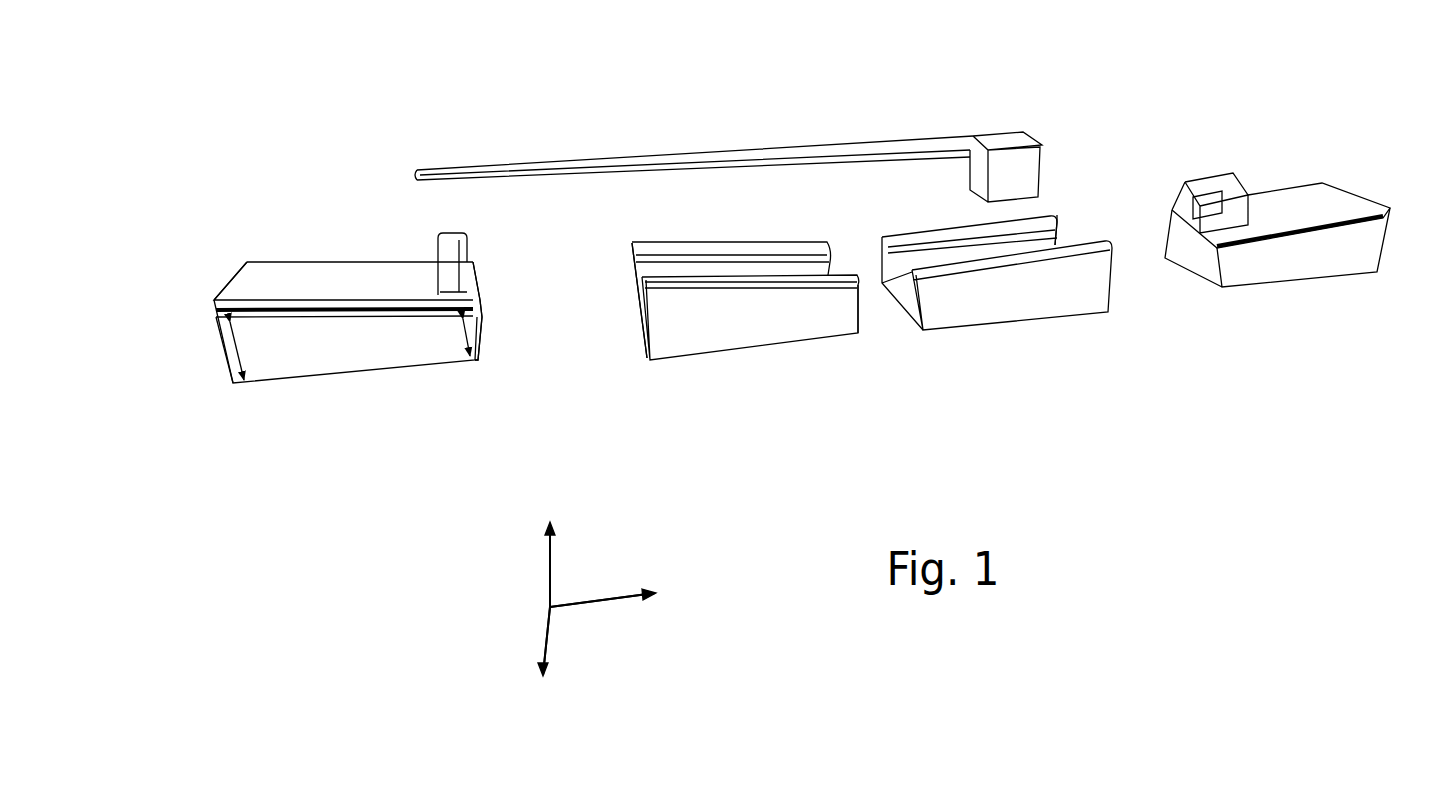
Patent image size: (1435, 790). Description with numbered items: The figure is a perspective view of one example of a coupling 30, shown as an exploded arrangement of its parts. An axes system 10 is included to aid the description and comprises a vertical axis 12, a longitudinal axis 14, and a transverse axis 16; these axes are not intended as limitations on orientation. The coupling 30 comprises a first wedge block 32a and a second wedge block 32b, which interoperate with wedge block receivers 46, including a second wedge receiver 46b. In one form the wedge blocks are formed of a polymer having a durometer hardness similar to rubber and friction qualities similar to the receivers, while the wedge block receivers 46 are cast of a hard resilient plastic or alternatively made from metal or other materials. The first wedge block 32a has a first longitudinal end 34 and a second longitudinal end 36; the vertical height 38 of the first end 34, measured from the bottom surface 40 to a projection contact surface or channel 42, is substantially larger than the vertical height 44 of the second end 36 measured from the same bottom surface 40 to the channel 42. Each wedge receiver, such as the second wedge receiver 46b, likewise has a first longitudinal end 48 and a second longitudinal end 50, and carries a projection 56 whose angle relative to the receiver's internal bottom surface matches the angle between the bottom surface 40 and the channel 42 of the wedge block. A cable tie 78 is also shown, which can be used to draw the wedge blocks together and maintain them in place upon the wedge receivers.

The axes system 10 is at (587, 577).
The vertical axis 12 is at (548, 582).
The longitudinal axis 14 is at (595, 607).
The transverse axis 16 is at (547, 637).
The coupling 30 is at (1103, 118).
The first wedge block 32a is at (352, 372).
The second wedge block 32b is at (1297, 283).
The first longitudinal end 34 is at (230, 368).
The second longitudinal end 36 is at (485, 310).
The vertical height 38 is at (243, 353).
The bottom surface 40 is at (475, 362).
The channel 42 is at (242, 313).
The vertical height 44 is at (463, 335).
The wedge block receivers 46 is at (777, 345).
The second wedge receiver 46b is at (1062, 317).
The first longitudinal end 48 is at (643, 343).
The second longitudinal end 50 is at (860, 333).
The projection 56 is at (1057, 228).
The cable tie 78 is at (865, 142).